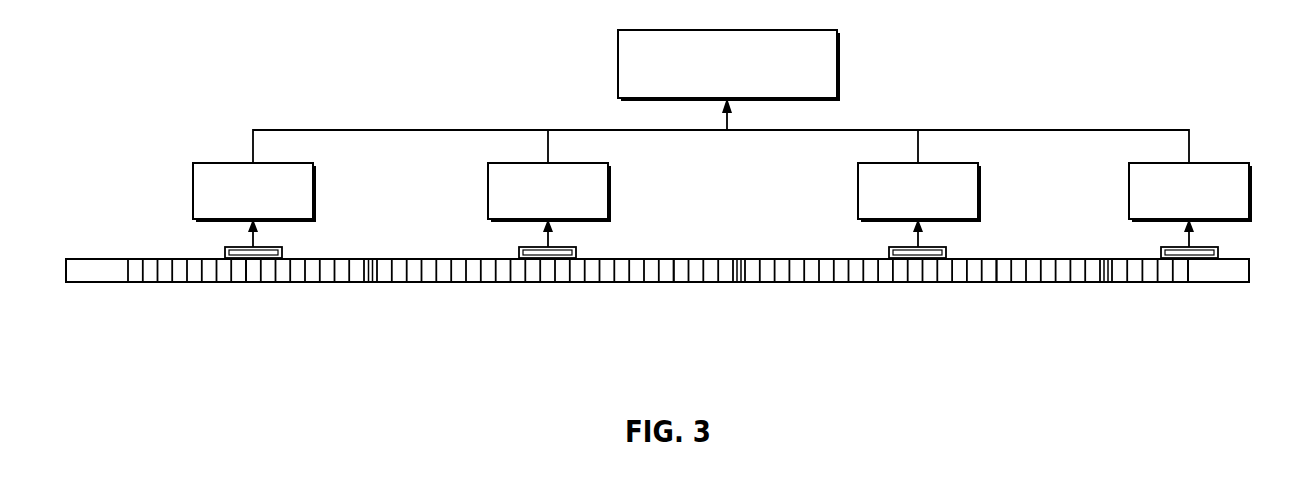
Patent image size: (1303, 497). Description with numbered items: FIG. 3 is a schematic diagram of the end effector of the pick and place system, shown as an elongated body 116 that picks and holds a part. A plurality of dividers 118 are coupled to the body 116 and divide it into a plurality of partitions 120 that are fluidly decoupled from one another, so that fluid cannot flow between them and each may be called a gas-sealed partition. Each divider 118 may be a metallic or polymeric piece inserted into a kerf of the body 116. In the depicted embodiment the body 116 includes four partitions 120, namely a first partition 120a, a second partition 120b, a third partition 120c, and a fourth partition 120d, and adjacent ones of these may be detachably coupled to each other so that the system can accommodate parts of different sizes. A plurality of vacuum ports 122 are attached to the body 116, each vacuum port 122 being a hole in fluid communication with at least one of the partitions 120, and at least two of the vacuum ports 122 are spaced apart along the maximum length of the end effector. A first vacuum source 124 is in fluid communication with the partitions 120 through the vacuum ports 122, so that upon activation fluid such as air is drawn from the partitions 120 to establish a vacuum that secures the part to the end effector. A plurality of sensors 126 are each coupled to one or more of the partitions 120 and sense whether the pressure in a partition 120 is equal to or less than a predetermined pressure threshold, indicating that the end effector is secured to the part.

The body 116 is at (100, 258).
The divider 118 is at (370, 283).
The partition 120 is at (195, 283).
The first partition 120a is at (270, 283).
The second partition 120b is at (681, 283).
The third partition 120c is at (1003, 283).
The fourth partition 120d is at (1224, 283).
The vacuum port 122 is at (225, 252).
The first vacuum source 124 is at (618, 63).
The sensor 126 is at (193, 190).